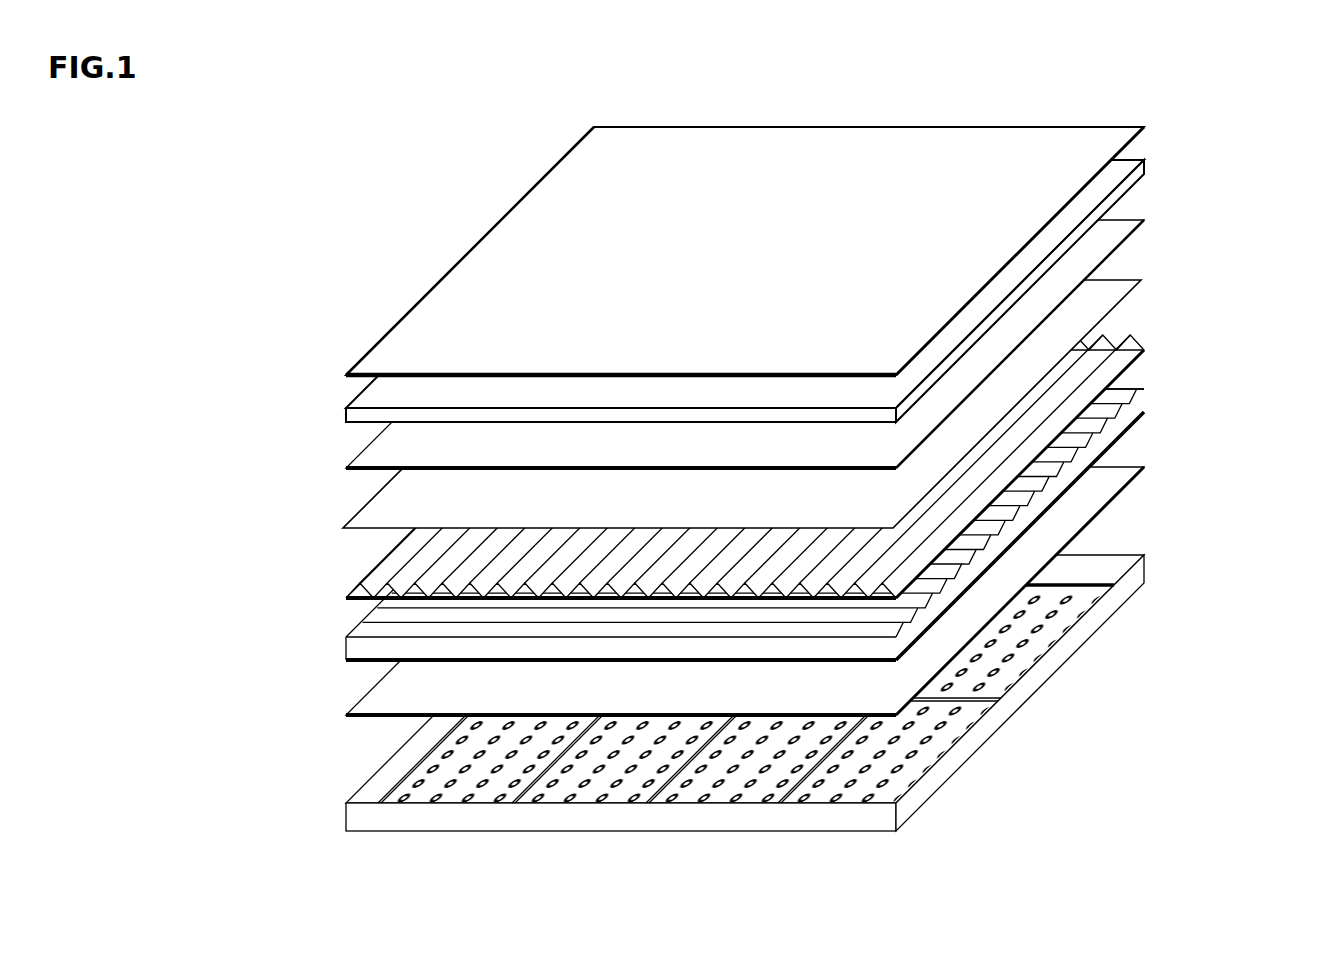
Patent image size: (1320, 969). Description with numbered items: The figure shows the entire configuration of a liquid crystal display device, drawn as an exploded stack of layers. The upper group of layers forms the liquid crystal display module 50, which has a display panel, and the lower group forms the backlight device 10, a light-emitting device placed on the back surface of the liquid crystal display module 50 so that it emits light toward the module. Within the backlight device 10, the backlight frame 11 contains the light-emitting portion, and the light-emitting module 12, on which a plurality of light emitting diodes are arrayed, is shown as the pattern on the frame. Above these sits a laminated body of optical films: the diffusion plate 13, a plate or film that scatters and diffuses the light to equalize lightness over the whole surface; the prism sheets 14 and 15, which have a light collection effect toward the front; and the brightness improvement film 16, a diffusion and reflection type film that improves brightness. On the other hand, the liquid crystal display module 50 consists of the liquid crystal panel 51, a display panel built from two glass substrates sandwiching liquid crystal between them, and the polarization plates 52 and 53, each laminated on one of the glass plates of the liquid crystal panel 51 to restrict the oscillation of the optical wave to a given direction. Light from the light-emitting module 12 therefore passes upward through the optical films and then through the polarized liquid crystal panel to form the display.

The backlight device 10 is at (828, 553).
The backlight frame 11 is at (1143, 560).
The light-emitting module 12 is at (1078, 603).
The diffusion plate 13 is at (1148, 468).
The prism sheet 14 is at (1145, 412).
The prism sheet 15 is at (1143, 352).
The brightness improvement film 16 is at (793, 404).
The liquid crystal display module 50 is at (829, 286).
The liquid crystal panel 51 is at (1145, 166).
The polarization plate 52 is at (1144, 220).
The polarization plate 53 is at (1243, 247).